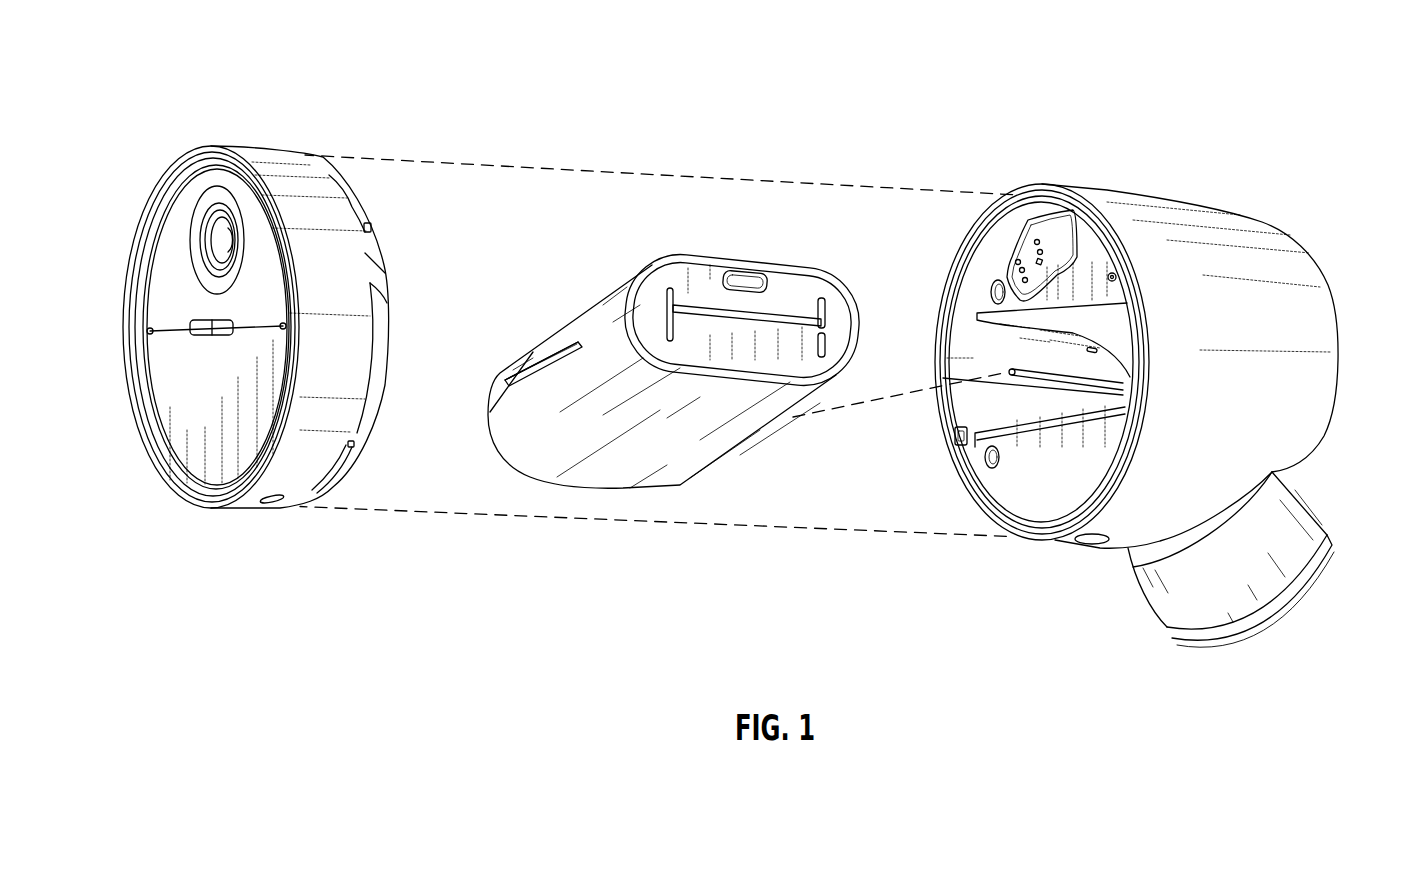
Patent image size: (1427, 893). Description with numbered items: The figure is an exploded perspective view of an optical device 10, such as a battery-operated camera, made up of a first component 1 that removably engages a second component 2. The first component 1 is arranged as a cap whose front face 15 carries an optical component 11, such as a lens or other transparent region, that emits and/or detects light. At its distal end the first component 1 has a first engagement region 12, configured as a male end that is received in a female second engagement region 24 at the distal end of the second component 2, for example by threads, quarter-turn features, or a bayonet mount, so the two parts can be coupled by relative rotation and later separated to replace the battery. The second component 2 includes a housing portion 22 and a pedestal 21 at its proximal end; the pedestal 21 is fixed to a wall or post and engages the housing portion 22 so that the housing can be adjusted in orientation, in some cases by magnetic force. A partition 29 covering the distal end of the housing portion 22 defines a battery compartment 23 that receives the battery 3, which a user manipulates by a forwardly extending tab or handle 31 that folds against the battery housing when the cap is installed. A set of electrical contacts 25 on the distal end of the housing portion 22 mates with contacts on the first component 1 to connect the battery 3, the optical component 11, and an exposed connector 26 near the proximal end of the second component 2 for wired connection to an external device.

The optical device 10 is at (203, 86).
The first component 1 is at (248, 146).
The optical component 11 is at (205, 237).
The first engagement region 12 is at (375, 221).
The front face 15 is at (178, 423).
The battery 3 is at (525, 438).
The tab or handle 31 is at (537, 352).
The second component 2 is at (1166, 200).
The mounting portion (pedestal) 21 is at (1310, 507).
The housing portion 22 is at (1325, 328).
The battery compartment 23 is at (968, 395).
The second engagement region 24 is at (955, 440).
The electrical contacts 25 is at (1030, 252).
The exposed connector 26 is at (1090, 545).
The partition 29 is at (1013, 483).